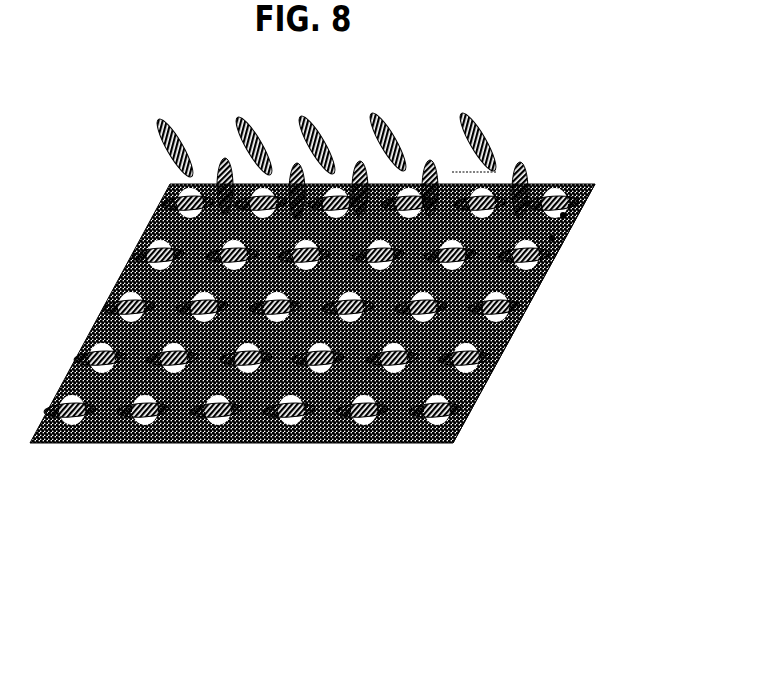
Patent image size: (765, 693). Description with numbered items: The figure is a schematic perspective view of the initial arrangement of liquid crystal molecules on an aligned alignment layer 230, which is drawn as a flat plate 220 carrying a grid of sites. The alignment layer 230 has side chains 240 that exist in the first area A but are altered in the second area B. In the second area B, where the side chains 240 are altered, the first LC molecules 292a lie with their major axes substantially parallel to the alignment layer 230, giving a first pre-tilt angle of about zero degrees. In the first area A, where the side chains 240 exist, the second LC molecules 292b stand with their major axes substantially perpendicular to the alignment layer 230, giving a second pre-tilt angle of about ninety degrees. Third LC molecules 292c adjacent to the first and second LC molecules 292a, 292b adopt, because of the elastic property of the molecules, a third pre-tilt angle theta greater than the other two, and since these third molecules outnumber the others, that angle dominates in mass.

The base plate 220 is at (380, 453).
The alignment layer 230 is at (512, 335).
The side chains 240 is at (534, 164).
The first LC molecules 292a is at (405, 182).
The second LC molecules 292b is at (430, 162).
The third LC molecules 292c is at (478, 130).
The first area A is at (555, 238).
The second area B is at (566, 215).